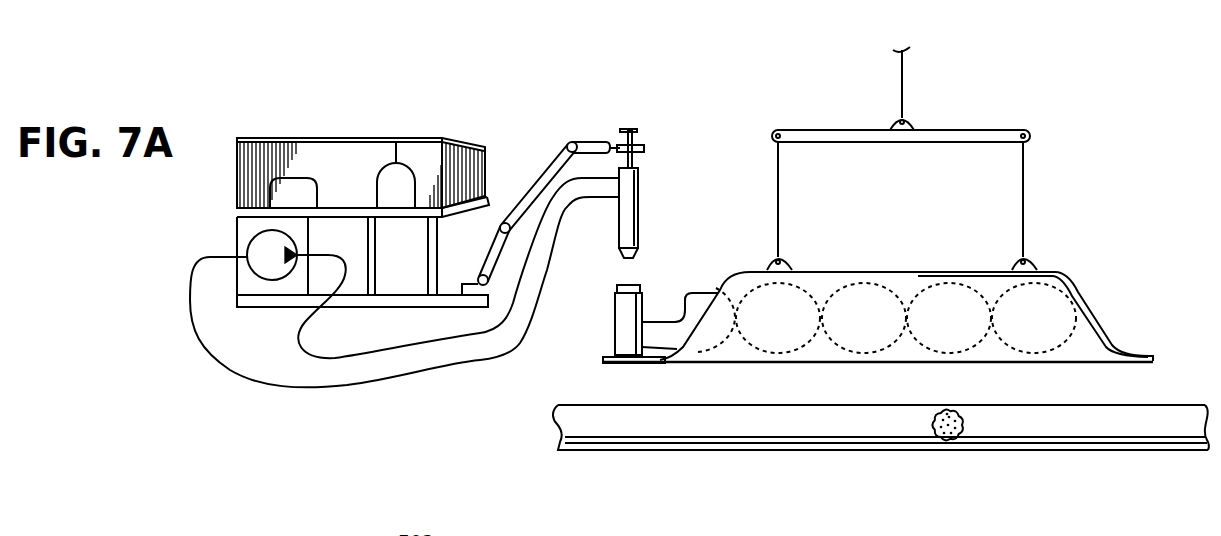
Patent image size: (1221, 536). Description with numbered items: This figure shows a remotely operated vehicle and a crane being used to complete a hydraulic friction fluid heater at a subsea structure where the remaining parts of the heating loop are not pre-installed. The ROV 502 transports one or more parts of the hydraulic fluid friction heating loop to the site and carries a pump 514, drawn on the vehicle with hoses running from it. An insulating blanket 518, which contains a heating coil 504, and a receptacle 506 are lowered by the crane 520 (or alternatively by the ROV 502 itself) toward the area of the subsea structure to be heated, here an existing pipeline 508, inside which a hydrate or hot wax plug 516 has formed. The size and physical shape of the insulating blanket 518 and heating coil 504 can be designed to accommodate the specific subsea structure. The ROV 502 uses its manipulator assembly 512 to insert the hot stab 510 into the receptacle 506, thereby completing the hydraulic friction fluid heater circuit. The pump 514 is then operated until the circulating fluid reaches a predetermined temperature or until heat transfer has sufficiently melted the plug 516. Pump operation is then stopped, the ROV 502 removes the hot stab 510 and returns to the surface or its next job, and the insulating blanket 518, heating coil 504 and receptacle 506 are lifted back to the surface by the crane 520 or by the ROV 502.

The ROV 502 is at (342, 143).
The heating coil 504 is at (1055, 285).
The receptacle 506 is at (620, 308).
The pipeline 508 is at (608, 443).
The hot stab 510 is at (637, 205).
The manipulator assembly 512 is at (533, 190).
The pump 514 is at (253, 247).
The hydrate or hot wax plug 516 is at (950, 440).
The insulating blanket 518 is at (1090, 338).
The crane 520 is at (968, 135).